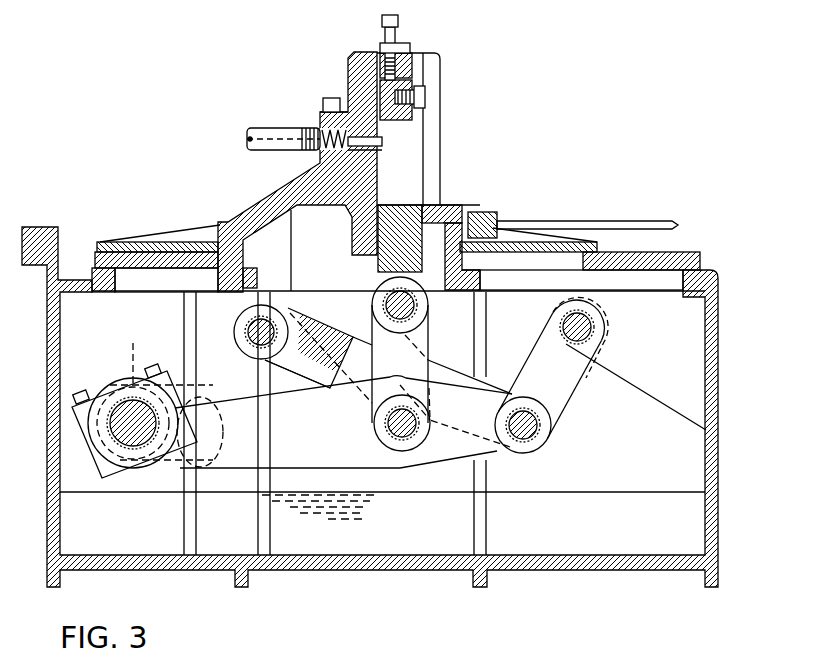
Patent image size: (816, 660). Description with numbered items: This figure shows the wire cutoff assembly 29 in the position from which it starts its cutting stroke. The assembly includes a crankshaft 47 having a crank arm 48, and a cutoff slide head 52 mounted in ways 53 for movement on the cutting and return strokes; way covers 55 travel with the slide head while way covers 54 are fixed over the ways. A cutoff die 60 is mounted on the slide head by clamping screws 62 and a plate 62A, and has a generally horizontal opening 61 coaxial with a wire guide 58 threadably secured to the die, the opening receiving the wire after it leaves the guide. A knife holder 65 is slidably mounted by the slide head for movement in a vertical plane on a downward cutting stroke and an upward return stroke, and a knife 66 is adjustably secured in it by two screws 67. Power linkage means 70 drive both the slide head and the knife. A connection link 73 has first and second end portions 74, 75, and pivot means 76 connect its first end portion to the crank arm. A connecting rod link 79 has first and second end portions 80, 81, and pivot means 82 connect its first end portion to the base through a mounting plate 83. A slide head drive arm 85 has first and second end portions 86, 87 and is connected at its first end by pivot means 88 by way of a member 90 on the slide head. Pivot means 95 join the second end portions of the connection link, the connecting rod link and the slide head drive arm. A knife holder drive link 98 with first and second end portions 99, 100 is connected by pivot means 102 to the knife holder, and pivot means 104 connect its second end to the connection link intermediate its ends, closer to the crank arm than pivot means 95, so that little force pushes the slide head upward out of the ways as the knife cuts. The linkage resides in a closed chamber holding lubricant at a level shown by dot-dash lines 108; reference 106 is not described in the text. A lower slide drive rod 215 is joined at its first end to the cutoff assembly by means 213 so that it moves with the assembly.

The wire cutoff assembly 29 is at (247, 213).
The crankshaft 47 is at (213, 467).
The crank arm 48 is at (133, 343).
The cutoff slide head 52 is at (295, 187).
The ways 53 is at (165, 278).
The way covers 54 is at (95, 260).
The way covers 55 is at (143, 242).
The wire guide 58 is at (295, 128).
The cutoff die 60 is at (378, 150).
The opening 61 is at (382, 142).
The clamping screws 62 is at (333, 98).
The plate 62A is at (318, 115).
The knife holder 65 is at (410, 70).
The knife 66 is at (393, 120).
The screws 67 is at (397, 33).
The power linkage means 70 is at (384, 499).
The connection link 73 is at (337, 463).
The first end portion 74 is at (158, 468).
The second end portion 75 is at (498, 458).
The pivot means 76 is at (110, 470).
The connecting rod link 79 is at (572, 403).
The first end portion 80 is at (590, 378).
The second end portion 81 is at (560, 430).
The pivot means 82 is at (593, 330).
The mounting plate 83 is at (667, 400).
The slide head drive arm 85 is at (443, 372).
The first end portion 86 is at (305, 367).
The second end portion 87 is at (500, 380).
The pivot means 88 is at (260, 320).
The member 90 is at (282, 245).
The pivot means 95 is at (528, 437).
The knife holder drive link 98 is at (378, 367).
The first end portion 99 is at (373, 325).
The second end portion 100 is at (383, 407).
The pivot means 102 is at (390, 300).
The pivot means 104 is at (410, 437).
The fluid level 106 is at (705, 498).
The dot-dash lines 108 is at (325, 495).
The means 213 is at (490, 213).
The lower slide drive rod 215 is at (583, 220).